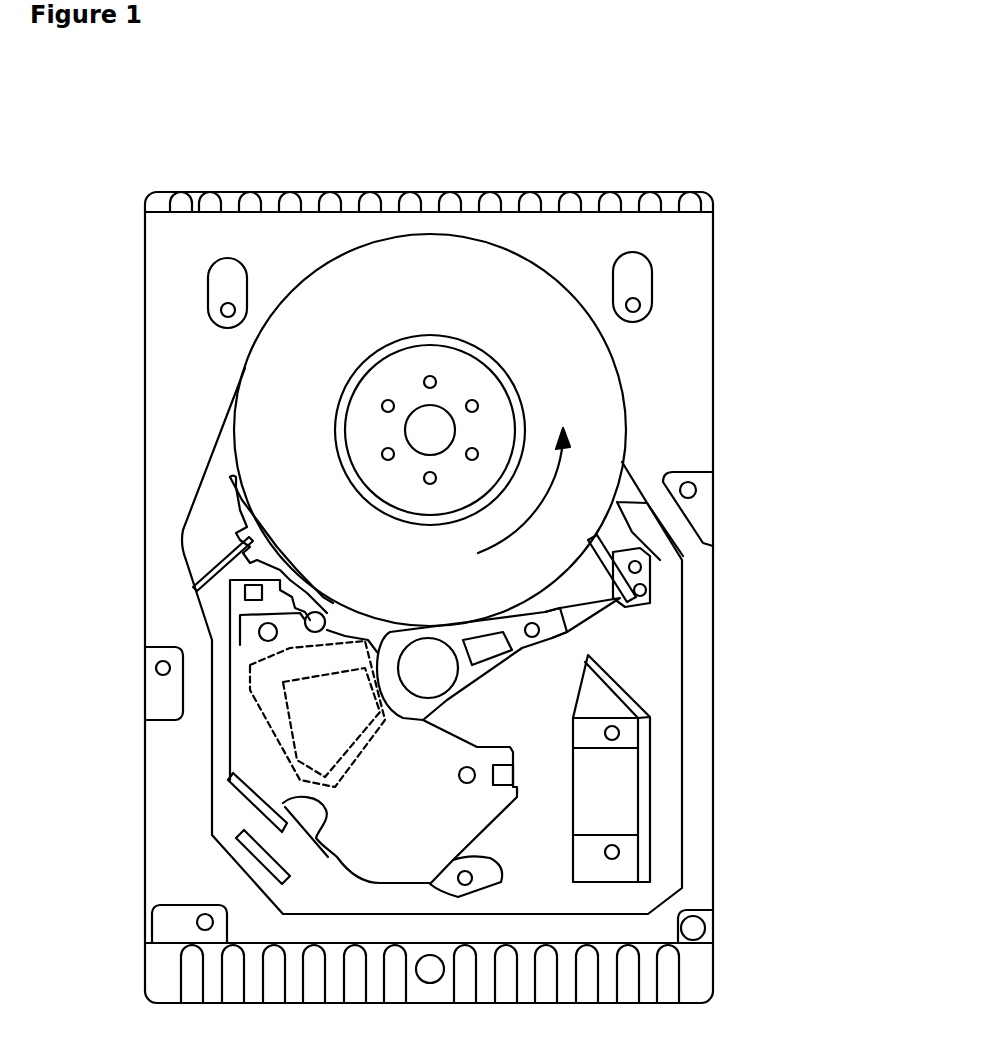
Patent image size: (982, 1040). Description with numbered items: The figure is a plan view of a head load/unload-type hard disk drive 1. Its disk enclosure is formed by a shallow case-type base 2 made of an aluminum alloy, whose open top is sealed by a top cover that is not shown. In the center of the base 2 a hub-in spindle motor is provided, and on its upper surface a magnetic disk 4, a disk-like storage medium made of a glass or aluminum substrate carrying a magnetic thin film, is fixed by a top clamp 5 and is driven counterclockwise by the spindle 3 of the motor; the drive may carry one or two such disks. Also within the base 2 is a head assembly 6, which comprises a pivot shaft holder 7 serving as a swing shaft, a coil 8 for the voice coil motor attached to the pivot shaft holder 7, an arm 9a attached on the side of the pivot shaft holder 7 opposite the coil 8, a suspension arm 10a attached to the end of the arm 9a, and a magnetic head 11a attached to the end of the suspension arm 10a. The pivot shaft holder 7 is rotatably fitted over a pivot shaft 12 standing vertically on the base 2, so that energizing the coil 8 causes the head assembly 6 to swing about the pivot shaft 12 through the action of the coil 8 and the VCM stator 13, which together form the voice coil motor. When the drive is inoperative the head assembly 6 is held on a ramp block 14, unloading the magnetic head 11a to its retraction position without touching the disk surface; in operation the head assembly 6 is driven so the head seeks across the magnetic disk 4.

The hard disk drive 1 is at (738, 178).
The base 2 is at (714, 562).
The spindle 3 is at (418, 430).
The magnetic disk 4 is at (280, 365).
The top clamp 5 is at (490, 440).
The head assembly 6 is at (426, 696).
The pivot shaft holder 7 is at (447, 700).
The coil for VCM 8 is at (282, 716).
The arm 9a is at (517, 650).
The suspension arm 10a is at (600, 613).
The magnetic head 11a is at (642, 628).
The pivot shaft 12 is at (423, 668).
The VCM stator 13 is at (297, 788).
The ramp block 14 is at (662, 577).